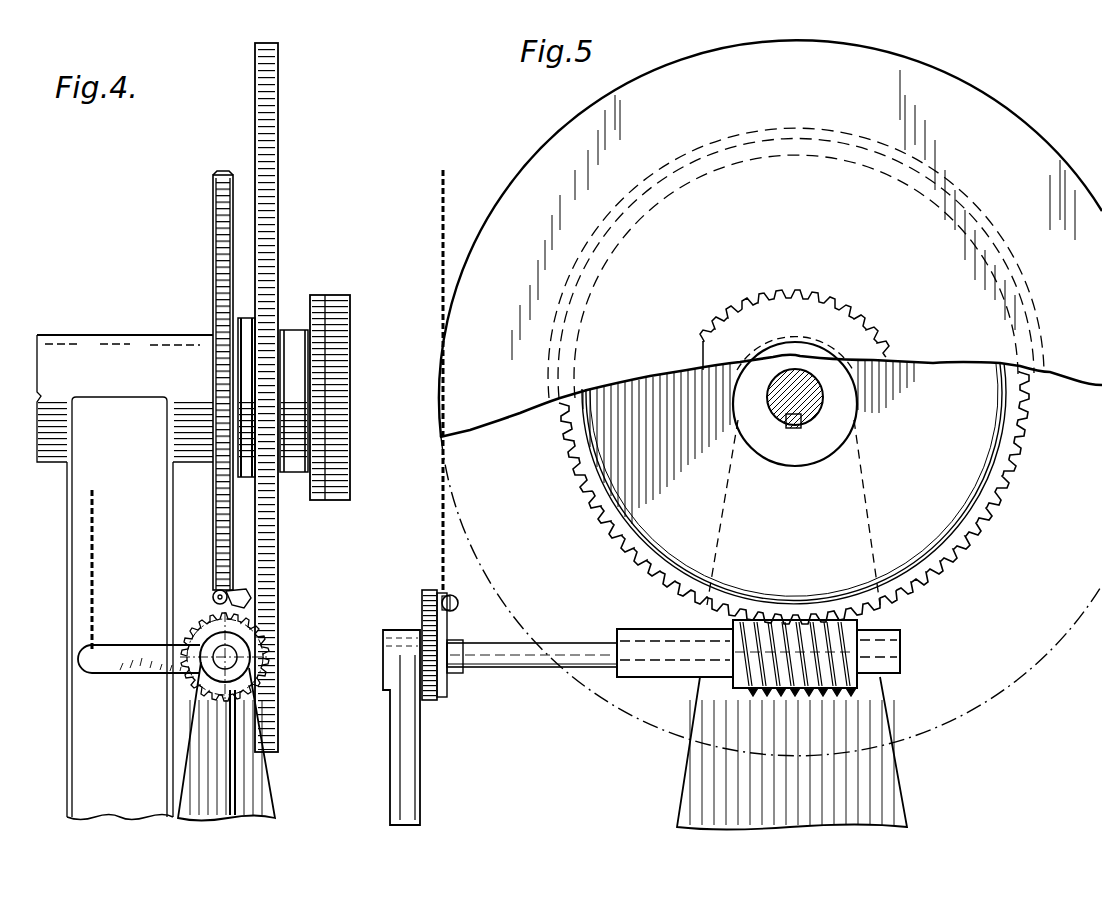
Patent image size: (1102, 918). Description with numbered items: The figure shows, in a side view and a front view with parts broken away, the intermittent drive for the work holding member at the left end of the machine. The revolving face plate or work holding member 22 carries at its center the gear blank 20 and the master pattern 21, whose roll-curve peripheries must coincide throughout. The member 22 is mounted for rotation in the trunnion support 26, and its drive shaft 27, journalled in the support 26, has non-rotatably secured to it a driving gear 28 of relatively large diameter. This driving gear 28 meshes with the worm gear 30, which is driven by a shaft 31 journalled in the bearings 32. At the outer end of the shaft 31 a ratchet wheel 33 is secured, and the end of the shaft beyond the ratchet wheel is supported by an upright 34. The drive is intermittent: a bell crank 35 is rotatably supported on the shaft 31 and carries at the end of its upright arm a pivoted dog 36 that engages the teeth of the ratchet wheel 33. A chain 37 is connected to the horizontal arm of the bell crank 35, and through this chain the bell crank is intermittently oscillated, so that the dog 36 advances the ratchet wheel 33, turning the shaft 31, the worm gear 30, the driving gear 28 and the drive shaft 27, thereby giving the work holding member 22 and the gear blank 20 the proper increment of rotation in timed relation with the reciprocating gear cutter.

In FIG. 5, the gear blank 20 is at (782, 317).
In FIG. 4, the master pattern 21 is at (350, 470).
In FIG. 4, the work holding member 22 is at (275, 160).
In FIG. 5, the work holding member 22 is at (973, 107).
In FIG. 4, the trunnion support 26 is at (120, 352).
In FIG. 5, the drive shaft 27 is at (820, 410).
In FIG. 4, the driving gear 28 is at (213, 212).
In FIG. 5, the driving gear 28 is at (963, 492).
In FIG. 5, the worm gear 30 is at (792, 683).
In FIG. 4, the shaft 31 is at (232, 657).
In FIG. 5, the shaft 31 is at (535, 660).
In FIG. 5, the bearings 32 is at (657, 668).
In FIG. 4, the ratchet wheel 33 is at (263, 620).
In FIG. 5, the ratchet wheel 33 is at (436, 690).
In FIG. 4, the upright 34 is at (263, 772).
In FIG. 5, the upright 34 is at (410, 765).
In FIG. 4, the bell crank 35 is at (129, 641).
In FIG. 4, the pivoted dog 36 is at (256, 577).
In FIG. 5, the pivoted dog 36 is at (422, 600).
In FIG. 4, the chain 37 is at (90, 563).
In FIG. 5, the chain 37 is at (441, 197).